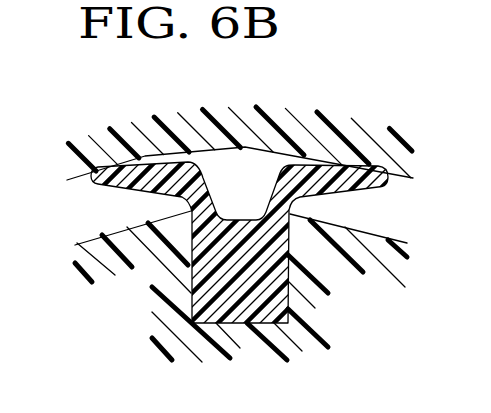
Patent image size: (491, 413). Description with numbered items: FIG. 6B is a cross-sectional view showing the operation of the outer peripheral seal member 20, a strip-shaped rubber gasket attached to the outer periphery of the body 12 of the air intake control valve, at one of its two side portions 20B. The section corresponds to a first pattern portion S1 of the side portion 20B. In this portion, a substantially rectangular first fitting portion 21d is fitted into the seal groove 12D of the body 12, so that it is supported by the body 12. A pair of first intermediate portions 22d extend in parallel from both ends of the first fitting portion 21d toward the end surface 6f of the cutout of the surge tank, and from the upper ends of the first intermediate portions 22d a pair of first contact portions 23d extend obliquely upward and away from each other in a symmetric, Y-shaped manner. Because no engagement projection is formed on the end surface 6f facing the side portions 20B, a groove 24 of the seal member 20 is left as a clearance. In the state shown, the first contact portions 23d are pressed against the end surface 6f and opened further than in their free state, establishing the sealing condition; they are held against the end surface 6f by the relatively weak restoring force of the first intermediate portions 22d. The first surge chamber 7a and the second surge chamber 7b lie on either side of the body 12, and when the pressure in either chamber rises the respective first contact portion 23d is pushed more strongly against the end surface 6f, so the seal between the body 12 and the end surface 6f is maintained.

The side portion 20B is at (291, 297).
The outer peripheral seal member 20 is at (245, 237).
The first contact portion 23d is at (133, 170).
The end surface 6f is at (256, 147).
The first pattern portion S1 is at (197, 156).
The groove 24 is at (238, 207).
The first surge chamber 7a is at (129, 221).
The second surge chamber 7b is at (391, 221).
The body 12 is at (93, 239).
The seal groove 12D is at (213, 323).
The first fitting portion 21d is at (257, 314).
The first intermediate portion 22d is at (190, 214).